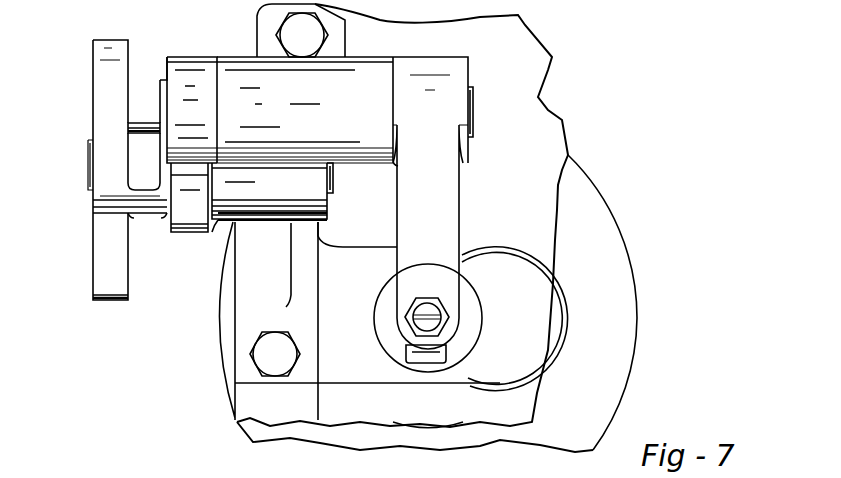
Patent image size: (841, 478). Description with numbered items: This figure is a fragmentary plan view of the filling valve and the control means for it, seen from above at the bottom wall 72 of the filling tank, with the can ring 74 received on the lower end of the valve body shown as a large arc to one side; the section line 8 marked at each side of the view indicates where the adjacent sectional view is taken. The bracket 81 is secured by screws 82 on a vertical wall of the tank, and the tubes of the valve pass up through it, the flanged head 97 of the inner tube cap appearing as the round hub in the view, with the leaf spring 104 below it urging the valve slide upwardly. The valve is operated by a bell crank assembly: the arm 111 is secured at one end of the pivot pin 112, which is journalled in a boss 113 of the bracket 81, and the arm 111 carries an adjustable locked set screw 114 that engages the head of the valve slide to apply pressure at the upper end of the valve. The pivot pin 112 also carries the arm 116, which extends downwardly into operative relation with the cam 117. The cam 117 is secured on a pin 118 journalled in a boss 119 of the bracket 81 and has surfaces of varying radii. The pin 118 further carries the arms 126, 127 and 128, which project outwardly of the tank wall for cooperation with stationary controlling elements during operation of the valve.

The bottom wall 72 is at (523, 236).
The can ring 74 is at (600, 337).
The section line 8- 8 is at (65, 310).
The bracket 81 is at (243, 302).
The screws 82 is at (262, 353).
The flanged head 97 is at (473, 320).
The leaf spring 104 is at (445, 357).
The arm 111 is at (440, 185).
The pivot pin 112 is at (474, 107).
The boss 113 is at (357, 72).
The set screw 114 is at (410, 325).
The arm 116 is at (188, 65).
The cam 117 is at (180, 233).
The pin 118 is at (333, 190).
The boss 119 is at (222, 222).
The arm 126 is at (140, 143).
The arm 127 is at (105, 75).
The arm 128 is at (110, 293).